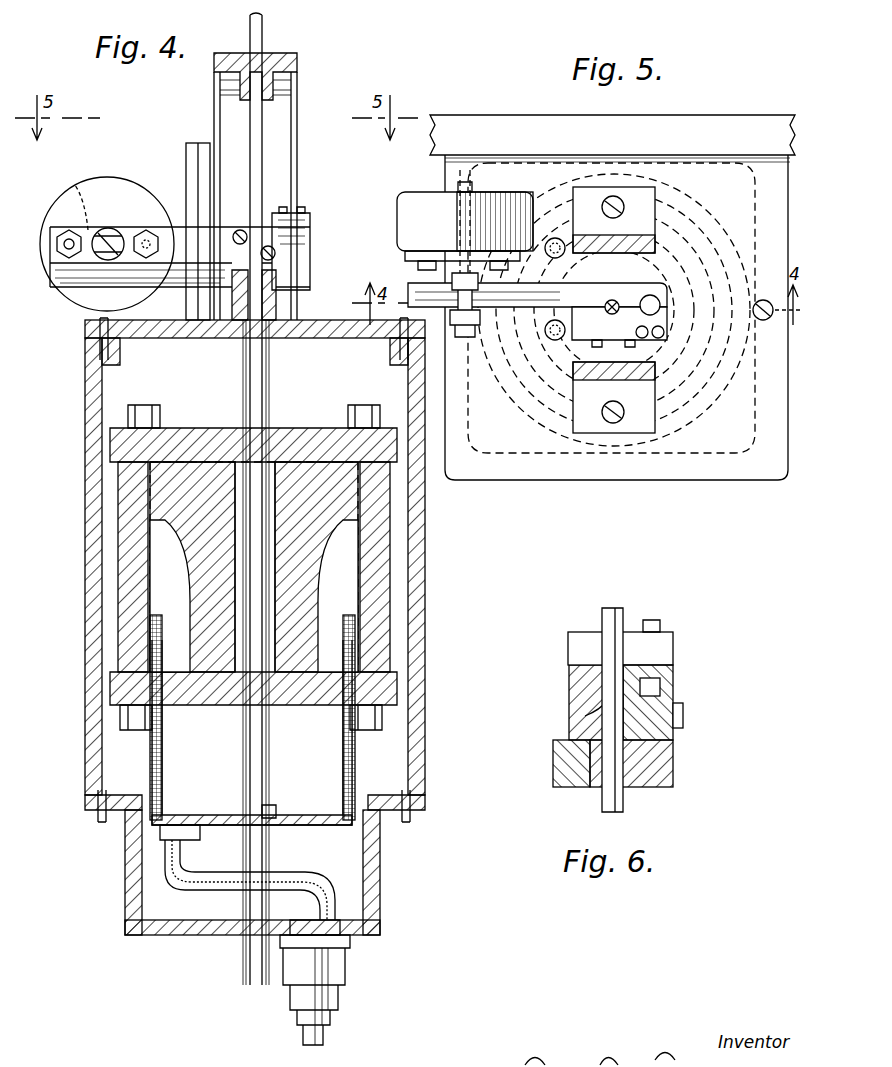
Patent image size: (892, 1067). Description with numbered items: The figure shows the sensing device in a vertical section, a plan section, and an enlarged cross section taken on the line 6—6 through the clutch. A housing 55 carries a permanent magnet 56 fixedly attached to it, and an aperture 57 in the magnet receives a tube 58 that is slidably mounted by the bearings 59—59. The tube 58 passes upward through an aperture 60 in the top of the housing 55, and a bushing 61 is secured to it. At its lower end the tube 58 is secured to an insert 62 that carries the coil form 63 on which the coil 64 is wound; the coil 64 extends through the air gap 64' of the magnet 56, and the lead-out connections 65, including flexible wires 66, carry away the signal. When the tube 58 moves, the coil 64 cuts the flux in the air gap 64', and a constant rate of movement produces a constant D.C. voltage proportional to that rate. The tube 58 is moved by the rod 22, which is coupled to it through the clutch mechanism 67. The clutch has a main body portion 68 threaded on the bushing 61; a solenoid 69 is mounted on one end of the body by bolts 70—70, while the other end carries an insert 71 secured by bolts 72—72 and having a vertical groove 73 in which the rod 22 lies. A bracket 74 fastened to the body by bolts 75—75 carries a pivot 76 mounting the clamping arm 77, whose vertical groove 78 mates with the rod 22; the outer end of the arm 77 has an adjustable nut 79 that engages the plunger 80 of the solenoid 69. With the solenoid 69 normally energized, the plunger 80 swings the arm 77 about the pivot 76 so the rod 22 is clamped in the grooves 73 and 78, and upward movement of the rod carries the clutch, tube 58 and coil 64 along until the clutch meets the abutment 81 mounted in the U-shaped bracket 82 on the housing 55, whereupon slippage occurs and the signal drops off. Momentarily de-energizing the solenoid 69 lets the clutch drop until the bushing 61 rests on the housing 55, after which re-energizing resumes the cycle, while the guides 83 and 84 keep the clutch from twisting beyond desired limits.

In FIG. 4, the section line 6— 6 is at (265, 178).
In FIG. 4, the rod 22 is at (262, 130).
In FIG. 5, the rod 22 is at (618, 303).
In FIG. 6, the rod 22 is at (625, 612).
In FIG. 4, the housing 55 is at (425, 608).
In FIG. 5, the housing 55 is at (600, 482).
In FIG. 4, the permanent magnet 56 is at (302, 563).
In FIG. 4, the aperture 57 is at (270, 525).
In FIG. 4, the tube 58 is at (269, 390).
In FIG. 4, the bearings 59 is at (270, 430).
In FIG. 4, the aperture 60 is at (290, 340).
In FIG. 4, the bushing 61 is at (276, 310).
In FIG. 4, the insert 62 is at (265, 812).
In FIG. 4, the coil form 63 is at (300, 825).
In FIG. 4, the coil 64 is at (403, 717).
In FIG. 4, the air gap 64' is at (179, 717).
In FIG. 4, the lead-out connections 65 is at (345, 968).
In FIG. 4, the flexible wires 66 is at (303, 877).
In FIG. 4, the clutch mechanism 67 is at (310, 240).
In FIG. 5, the clutch mechanism 67 is at (672, 313).
In FIG. 6, the clutch mechanism 67 is at (673, 758).
In FIG. 4, the main body portion 68 is at (175, 265).
In FIG. 5, the main body portion 68 is at (497, 307).
In FIG. 6, the main body portion 68 is at (570, 787).
In FIG. 4, the solenoid 69 is at (98, 177).
In FIG. 5, the solenoid 69 is at (397, 215).
In FIG. 4, the bolts 70 is at (66, 236).
In FIG. 4, the insert 71 is at (238, 230).
In FIG. 5, the insert 71 is at (600, 340).
In FIG. 6, the insert 71 is at (660, 695).
In FIG. 4, the bolts 72 is at (245, 230).
In FIG. 5, the bolts 72 is at (605, 343).
In FIG. 6, the bolts 72 is at (685, 718).
In FIG. 5, the groove 73 is at (615, 338).
In FIG. 6, the groove 73 is at (660, 685).
In FIG. 4, the bracket 74 is at (305, 215).
In FIG. 5, the bracket 74 is at (650, 285).
In FIG. 6, the bracket 74 is at (673, 640).
In FIG. 4, the bolts 75 is at (284, 207).
In FIG. 5, the bolts 75 is at (660, 338).
In FIG. 6, the bolts 75 is at (660, 625).
In FIG. 4, the pivot 76 is at (310, 252).
In FIG. 5, the pivot 76 is at (655, 300).
In FIG. 6, the pivot 76 is at (575, 648).
In FIG. 4, the clamping arm 77 is at (85, 253).
In FIG. 5, the clamping arm 77 is at (560, 298).
In FIG. 6, the clamping arm 77 is at (569, 676).
In FIG. 6, the groove 78 is at (585, 716).
In FIG. 4, the adjustable nut 79 is at (110, 236).
In FIG. 5, the adjustable nut 79 is at (462, 337).
In FIG. 4, the plunger 80 is at (75, 185).
In FIG. 5, the plunger 80 is at (458, 186).
In FIG. 4, the abutment 81 is at (297, 72).
In FIG. 4, the U-shaped bracket 82 is at (297, 95).
In FIG. 5, the U-shaped bracket 82 is at (655, 372).
In FIG. 4, the guide 83 is at (196, 143).
In FIG. 5, the guide 83 is at (555, 238).
In FIG. 5, the guide 84 is at (545, 330).